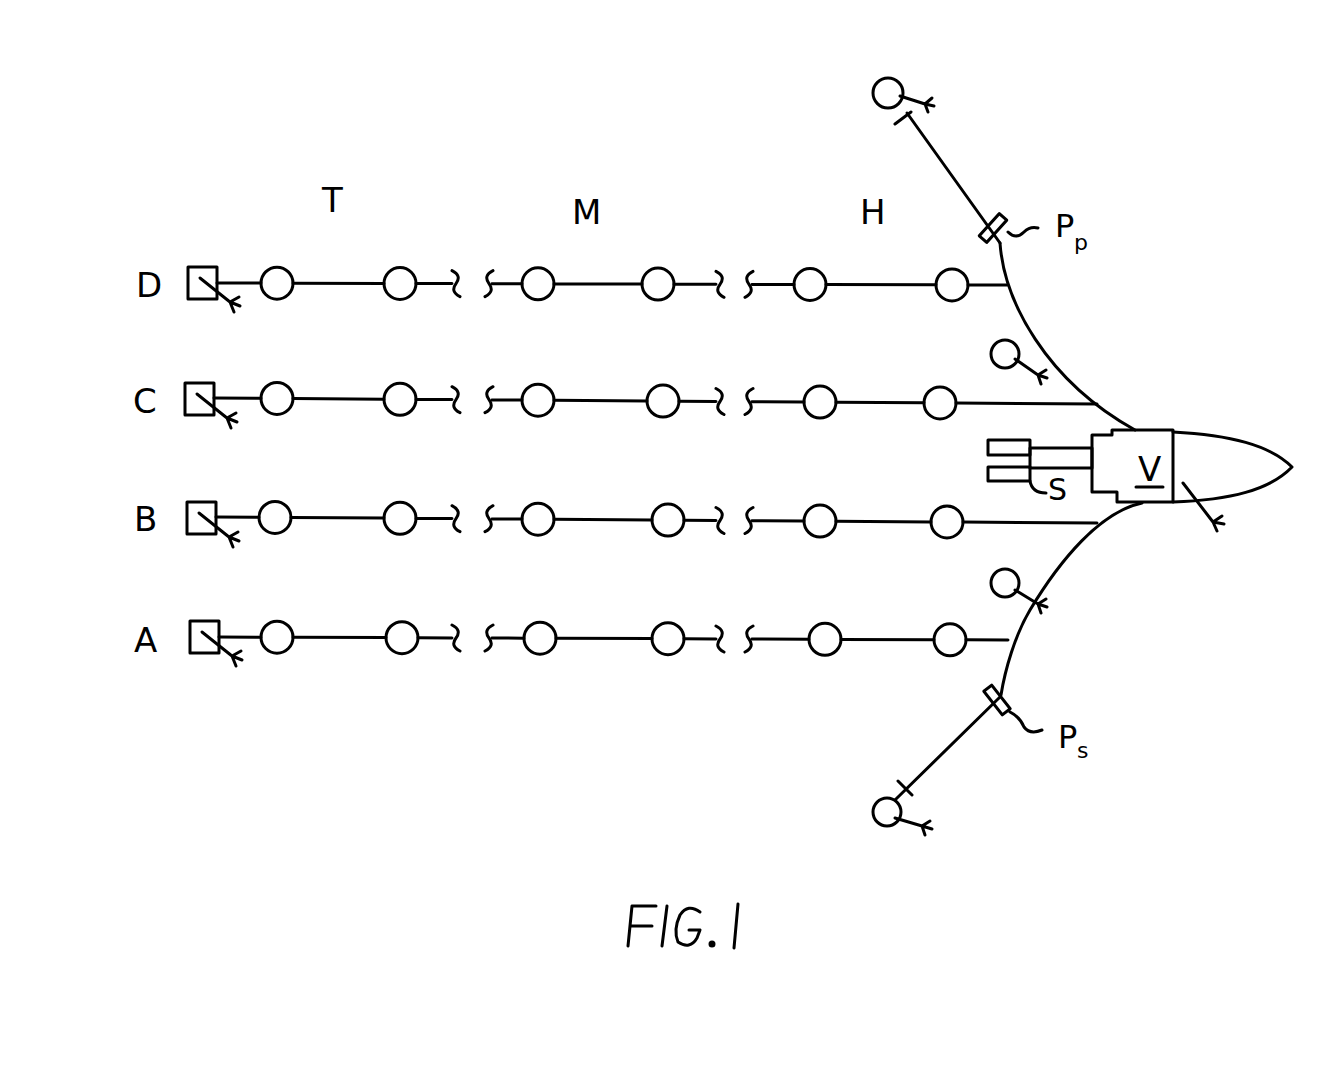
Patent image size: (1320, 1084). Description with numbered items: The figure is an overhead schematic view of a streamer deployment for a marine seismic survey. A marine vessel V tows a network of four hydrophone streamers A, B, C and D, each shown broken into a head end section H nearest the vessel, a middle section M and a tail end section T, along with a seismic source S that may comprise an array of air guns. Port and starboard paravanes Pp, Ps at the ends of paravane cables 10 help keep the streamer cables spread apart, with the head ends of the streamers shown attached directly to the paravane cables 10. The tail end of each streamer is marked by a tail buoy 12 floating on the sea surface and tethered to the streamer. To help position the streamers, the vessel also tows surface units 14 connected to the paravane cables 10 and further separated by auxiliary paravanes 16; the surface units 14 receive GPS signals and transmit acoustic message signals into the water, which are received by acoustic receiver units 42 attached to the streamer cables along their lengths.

The paravane cables 10 is at (1080, 370).
The tail buoy 12 is at (193, 265).
The surface units 14 is at (899, 80).
The auxiliary paravanes 16 is at (904, 126).
The acoustic receiver units 42 is at (405, 270).